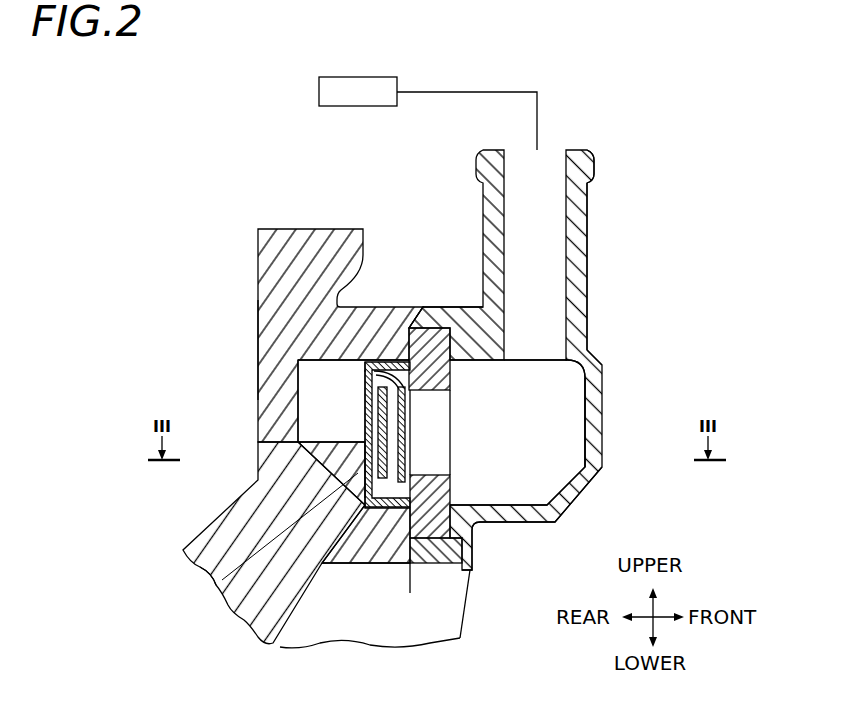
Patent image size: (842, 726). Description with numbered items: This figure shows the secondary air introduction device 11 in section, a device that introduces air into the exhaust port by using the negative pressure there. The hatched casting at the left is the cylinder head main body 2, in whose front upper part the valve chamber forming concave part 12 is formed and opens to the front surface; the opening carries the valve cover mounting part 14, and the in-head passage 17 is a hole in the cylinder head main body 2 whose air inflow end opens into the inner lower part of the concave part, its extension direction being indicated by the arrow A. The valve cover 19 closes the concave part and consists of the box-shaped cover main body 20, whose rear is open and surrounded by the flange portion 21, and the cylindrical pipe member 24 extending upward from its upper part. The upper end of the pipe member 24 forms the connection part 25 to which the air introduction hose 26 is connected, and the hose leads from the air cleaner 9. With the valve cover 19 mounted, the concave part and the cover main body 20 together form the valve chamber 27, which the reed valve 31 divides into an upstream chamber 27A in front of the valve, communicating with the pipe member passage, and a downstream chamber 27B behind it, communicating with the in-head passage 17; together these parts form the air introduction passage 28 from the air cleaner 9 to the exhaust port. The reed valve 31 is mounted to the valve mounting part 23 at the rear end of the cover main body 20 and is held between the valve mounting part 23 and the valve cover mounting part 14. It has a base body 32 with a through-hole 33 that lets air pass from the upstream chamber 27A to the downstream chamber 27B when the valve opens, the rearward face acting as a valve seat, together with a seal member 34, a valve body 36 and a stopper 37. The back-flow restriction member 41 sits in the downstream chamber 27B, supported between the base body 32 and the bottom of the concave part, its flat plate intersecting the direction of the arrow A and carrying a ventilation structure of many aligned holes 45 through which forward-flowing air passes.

The cylinder head main body 2 is at (273, 260).
The air cleaner 9 is at (357, 77).
The secondary air introduction device 11 is at (628, 122).
The valve chamber forming concave part 12 is at (318, 372).
The valve cover mounting part 14 is at (388, 553).
The in-head passage 17 is at (222, 592).
The valve cover 19 is at (608, 355).
The cover main body 20 is at (581, 500).
The flange portion 21 is at (433, 552).
The valve mounting part 23 is at (473, 537).
The pipe member 24 is at (584, 252).
The connection part 25 is at (590, 163).
The air introduction hose 26 is at (487, 91).
The valve chamber 27 is at (572, 402).
The upstream chamber 27A is at (570, 436).
The downstream chamber 27B is at (318, 393).
The air introduction passage 28 is at (312, 332).
The reed valve 31 is at (460, 318).
The base body 32 is at (428, 330).
The through-hole 33 is at (426, 476).
The seal member 34 is at (401, 385).
The valve body 36 is at (385, 385).
The stopper 37 is at (372, 365).
The back-flow restriction member 41 is at (358, 410).
The holes 45 is at (360, 433).
The arrow A is at (275, 537).